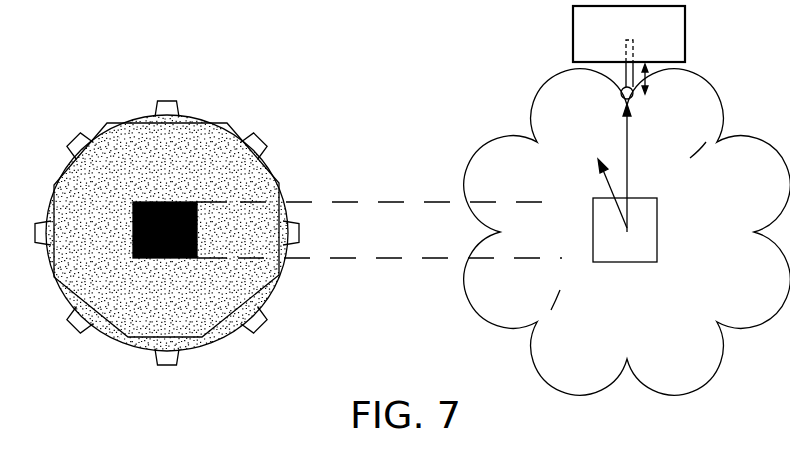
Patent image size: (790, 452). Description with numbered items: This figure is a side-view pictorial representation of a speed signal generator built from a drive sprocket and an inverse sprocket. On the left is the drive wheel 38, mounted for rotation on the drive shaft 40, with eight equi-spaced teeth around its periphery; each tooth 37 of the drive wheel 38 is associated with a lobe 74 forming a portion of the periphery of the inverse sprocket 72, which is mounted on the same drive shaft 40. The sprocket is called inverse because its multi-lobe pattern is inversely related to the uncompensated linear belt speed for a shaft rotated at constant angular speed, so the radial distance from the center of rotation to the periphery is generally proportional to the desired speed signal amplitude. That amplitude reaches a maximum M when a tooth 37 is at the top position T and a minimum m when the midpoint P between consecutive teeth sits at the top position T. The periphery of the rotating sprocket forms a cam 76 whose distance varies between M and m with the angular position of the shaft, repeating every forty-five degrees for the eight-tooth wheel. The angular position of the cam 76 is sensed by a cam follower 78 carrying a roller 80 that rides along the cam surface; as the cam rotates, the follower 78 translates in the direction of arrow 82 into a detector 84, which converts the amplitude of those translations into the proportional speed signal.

The tooth 37 is at (263, 133).
The drive wheel 38 is at (204, 118).
The drive shaft 40 is at (348, 213).
The inverse sprocket 72 is at (688, 203).
The lobe 74 is at (692, 158).
The cam 76 is at (558, 288).
The cam follower 78 is at (625, 70).
The roller 80 is at (620, 99).
The arrow 82 is at (648, 80).
The detector 84 is at (678, 27).
The midpoint P is at (118, 127).
The top position T is at (164, 103).
The maximum M is at (628, 180).
The minimum m is at (607, 188).